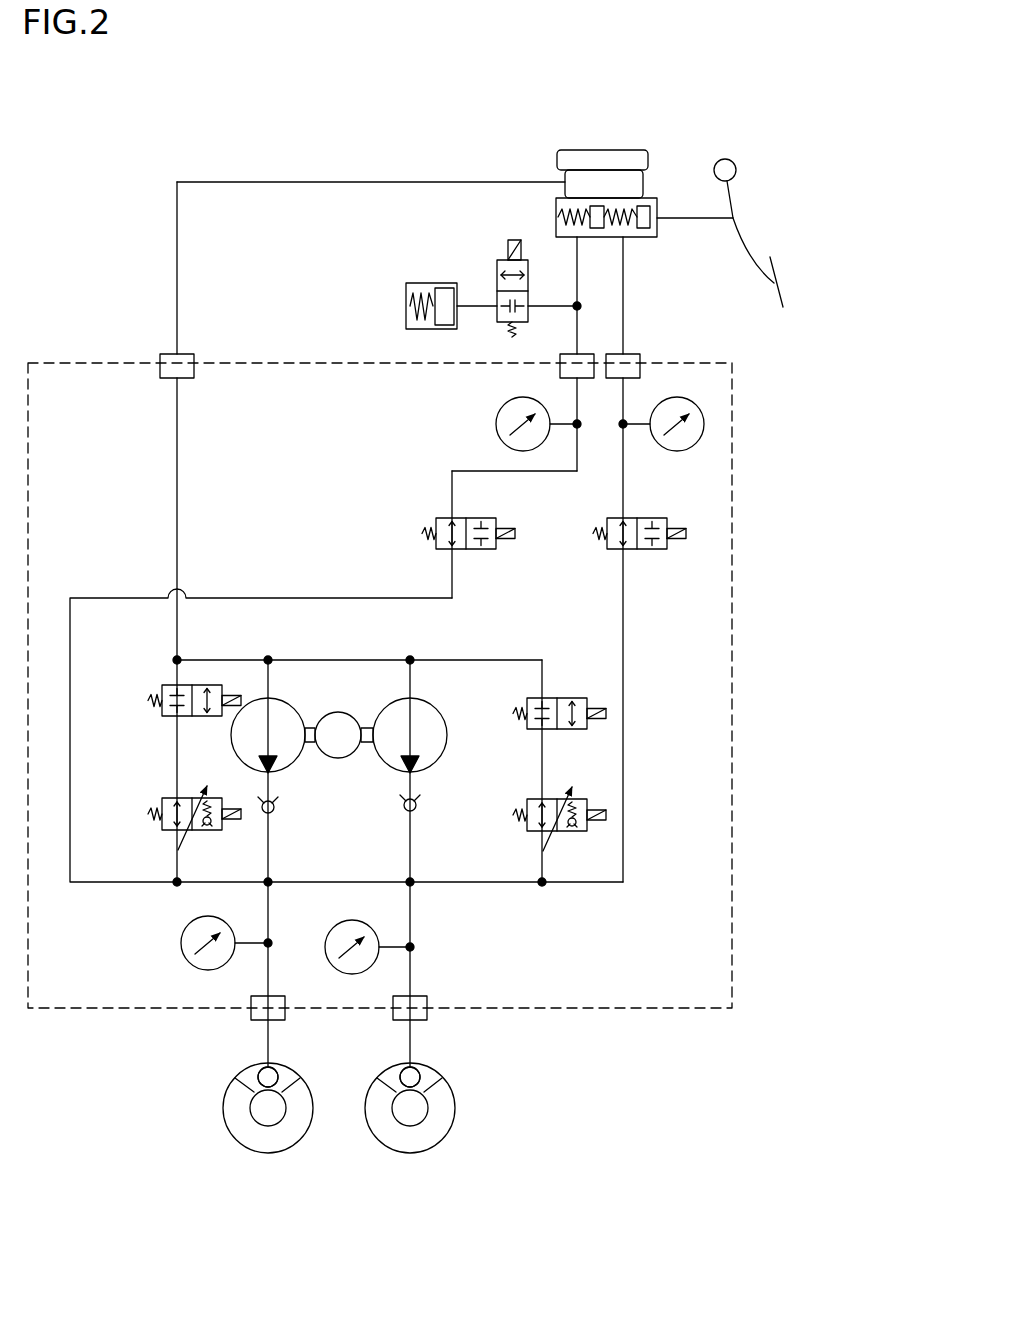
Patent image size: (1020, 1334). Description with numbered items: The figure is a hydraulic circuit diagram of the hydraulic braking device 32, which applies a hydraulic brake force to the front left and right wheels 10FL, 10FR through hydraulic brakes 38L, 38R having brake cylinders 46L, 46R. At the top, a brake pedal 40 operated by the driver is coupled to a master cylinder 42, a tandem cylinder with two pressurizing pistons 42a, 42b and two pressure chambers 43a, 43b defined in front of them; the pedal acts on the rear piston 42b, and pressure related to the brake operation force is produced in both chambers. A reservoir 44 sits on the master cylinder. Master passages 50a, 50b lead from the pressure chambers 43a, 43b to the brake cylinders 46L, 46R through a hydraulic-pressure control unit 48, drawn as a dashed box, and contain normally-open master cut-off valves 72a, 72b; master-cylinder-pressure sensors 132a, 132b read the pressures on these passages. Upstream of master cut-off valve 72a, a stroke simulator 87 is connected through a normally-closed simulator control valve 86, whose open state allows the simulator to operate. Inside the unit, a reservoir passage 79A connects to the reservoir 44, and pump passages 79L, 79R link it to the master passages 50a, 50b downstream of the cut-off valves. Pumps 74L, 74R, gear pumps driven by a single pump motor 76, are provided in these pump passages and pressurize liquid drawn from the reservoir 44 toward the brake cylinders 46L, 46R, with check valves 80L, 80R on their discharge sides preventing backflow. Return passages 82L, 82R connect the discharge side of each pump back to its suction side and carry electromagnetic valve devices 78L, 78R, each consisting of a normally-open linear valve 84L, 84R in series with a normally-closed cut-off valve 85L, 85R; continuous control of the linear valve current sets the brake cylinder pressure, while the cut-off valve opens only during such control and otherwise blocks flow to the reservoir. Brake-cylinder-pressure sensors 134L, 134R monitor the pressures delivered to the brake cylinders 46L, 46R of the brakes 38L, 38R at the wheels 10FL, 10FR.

The hydraulic braking device 32 is at (157, 214).
The reservoir 44 is at (570, 152).
The master cylinder 42 is at (655, 200).
The pressure chamber 43a is at (568, 232).
The pressure chamber 43b is at (615, 230).
The pressurizing piston 42a is at (596, 230).
The pressurizing piston 42b is at (645, 230).
The brake pedal 40 is at (781, 297).
The stroke simulator 87 is at (413, 283).
The simulator control valve 86 is at (503, 262).
The master-cylinder-pressure sensor 132a is at (496, 425).
The master-cylinder-pressure sensor 132b is at (685, 447).
The master cut-off valve 72a is at (490, 520).
The master cut-off valve 72b is at (665, 548).
The reservoir passage 79A is at (176, 520).
The master passage 50a is at (280, 598).
The master passage 50b is at (625, 622).
The hydraulic-pressure control unit 48 is at (727, 712).
The cut-off valve 85L is at (170, 685).
The cut-off valve 85R is at (580, 698).
The return passage 82L is at (176, 752).
The return passage 82R is at (544, 752).
The pump 74L is at (287, 704).
The pump 74R is at (430, 704).
The pump motor 76 is at (340, 758).
The electromagnetic valve device 78L is at (146, 785).
The electromagnetic valve device 78R is at (522, 766).
The linear valve 84L is at (213, 832).
The linear valve 84R is at (578, 833).
The check valve 80L is at (276, 806).
The check valve 80R is at (403, 808).
The pump passage 79L is at (270, 862).
The pump passage 79R is at (412, 862).
The brake-cylinder-pressure sensor 134L is at (181, 948).
The brake-cylinder-pressure sensor 134R is at (326, 952).
The hydraulic brake 38L is at (242, 1056).
The hydraulic brake 38R is at (436, 1058).
The brake cylinder 46L is at (276, 1068).
The brake cylinder 46R is at (410, 1066).
The front left wheel 10FL is at (259, 1163).
The front right wheel 10FR is at (406, 1163).